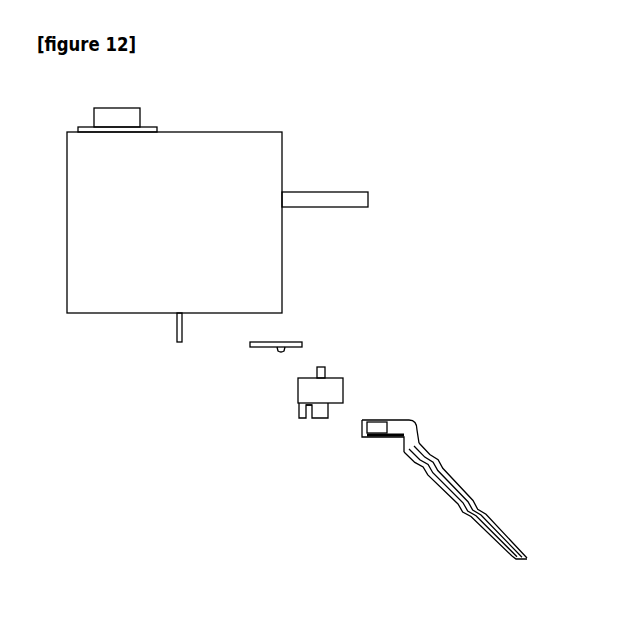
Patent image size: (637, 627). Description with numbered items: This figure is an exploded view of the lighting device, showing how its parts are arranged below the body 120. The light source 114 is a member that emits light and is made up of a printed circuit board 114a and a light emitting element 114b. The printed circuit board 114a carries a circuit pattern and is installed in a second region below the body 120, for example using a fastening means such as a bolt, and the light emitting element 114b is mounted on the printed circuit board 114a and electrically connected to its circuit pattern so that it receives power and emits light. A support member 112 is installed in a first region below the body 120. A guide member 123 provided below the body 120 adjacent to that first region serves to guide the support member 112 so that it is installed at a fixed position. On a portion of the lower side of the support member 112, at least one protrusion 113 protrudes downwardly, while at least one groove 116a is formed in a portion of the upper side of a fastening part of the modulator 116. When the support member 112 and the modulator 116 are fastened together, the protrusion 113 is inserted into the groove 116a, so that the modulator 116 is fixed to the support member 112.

The body 120 is at (310, 137).
The guide member 123 is at (175, 331).
The light source 114 is at (294, 333).
The printed circuit board 114a is at (304, 345).
The light emitting element 114b is at (272, 349).
The support member 112 is at (298, 388).
The protrusion 113 is at (318, 420).
The modulator 116 is at (427, 446).
The groove 116a is at (383, 410).